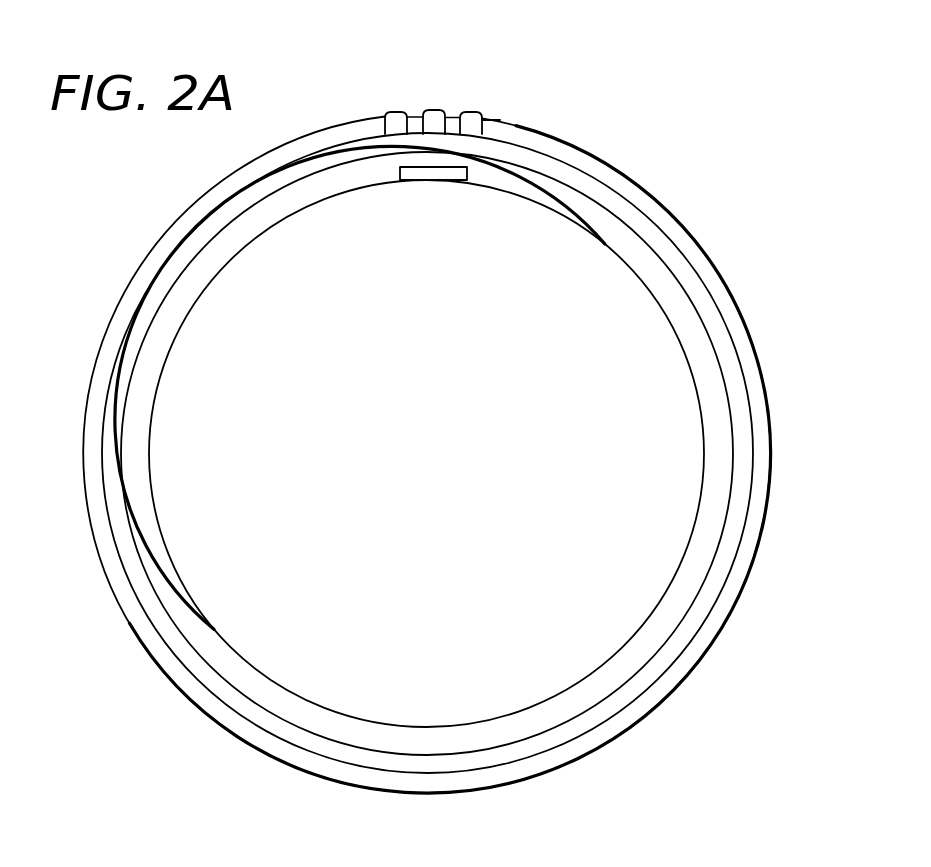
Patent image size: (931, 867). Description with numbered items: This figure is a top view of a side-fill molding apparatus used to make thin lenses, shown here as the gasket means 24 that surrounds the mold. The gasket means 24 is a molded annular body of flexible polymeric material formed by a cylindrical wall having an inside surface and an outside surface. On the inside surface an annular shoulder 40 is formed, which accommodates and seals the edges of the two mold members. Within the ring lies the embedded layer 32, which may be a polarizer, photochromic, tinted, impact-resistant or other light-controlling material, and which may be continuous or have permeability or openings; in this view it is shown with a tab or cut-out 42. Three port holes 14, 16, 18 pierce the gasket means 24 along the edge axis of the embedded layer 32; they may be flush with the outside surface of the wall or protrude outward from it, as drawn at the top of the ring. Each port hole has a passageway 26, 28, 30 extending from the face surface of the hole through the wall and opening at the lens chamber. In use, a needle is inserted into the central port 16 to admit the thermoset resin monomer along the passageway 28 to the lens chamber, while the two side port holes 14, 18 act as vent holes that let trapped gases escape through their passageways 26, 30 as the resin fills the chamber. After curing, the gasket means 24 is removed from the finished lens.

The port hole 14 is at (388, 115).
The central port 16 is at (431, 116).
The port hole 18 is at (472, 113).
The gasket means 24 is at (770, 423).
The passageway 26 is at (396, 116).
The passageway 28 is at (438, 112).
The passageway 30 is at (473, 120).
The embedded layer 32 is at (640, 333).
The annular shoulder 40 is at (635, 245).
The tabs or cut-outs 42 is at (442, 172).